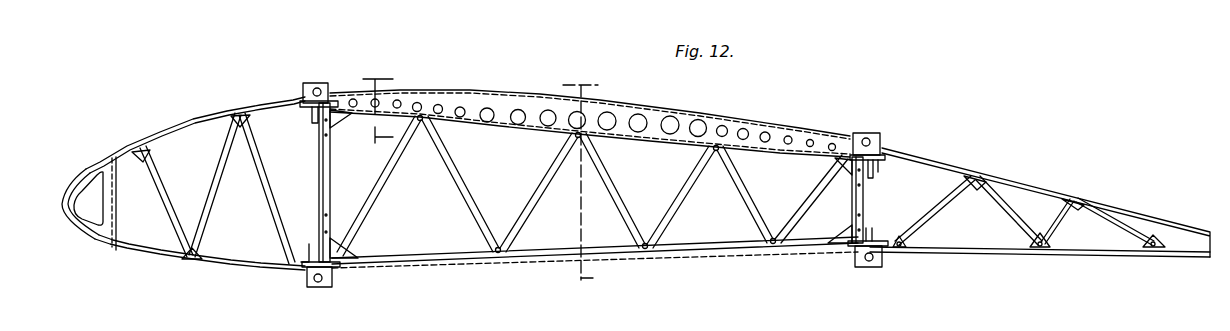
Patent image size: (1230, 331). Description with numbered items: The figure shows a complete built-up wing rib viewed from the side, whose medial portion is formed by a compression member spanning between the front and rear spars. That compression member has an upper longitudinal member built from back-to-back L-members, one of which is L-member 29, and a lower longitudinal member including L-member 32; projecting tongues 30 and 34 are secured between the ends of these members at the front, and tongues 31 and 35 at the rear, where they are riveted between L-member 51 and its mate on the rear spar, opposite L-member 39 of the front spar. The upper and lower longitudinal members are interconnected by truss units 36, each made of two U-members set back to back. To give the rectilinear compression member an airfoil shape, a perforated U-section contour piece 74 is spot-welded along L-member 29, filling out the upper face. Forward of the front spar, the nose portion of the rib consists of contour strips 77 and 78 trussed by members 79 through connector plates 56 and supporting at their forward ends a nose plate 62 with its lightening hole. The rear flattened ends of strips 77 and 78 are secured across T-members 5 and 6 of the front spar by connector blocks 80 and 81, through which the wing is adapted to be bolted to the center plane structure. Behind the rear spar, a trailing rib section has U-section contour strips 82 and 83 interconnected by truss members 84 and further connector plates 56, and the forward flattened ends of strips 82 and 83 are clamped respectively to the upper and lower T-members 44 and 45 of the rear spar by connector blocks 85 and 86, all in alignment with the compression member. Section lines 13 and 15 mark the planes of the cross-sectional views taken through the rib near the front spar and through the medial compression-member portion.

The T-member 5 is at (312, 115).
The T-member 6 is at (309, 258).
The section line 13- 13 is at (378, 113).
The section line 15- 15 is at (579, 185).
The L-member 29 is at (517, 133).
The projecting tongue 30 is at (339, 122).
The projecting tongue 31 is at (828, 177).
The L-member 32 is at (694, 238).
The projecting tongue 34 is at (342, 246).
The projecting tongue 35 is at (846, 236).
The truss unit 36 is at (677, 195).
The L-member 39 is at (330, 178).
The upper T-member 44 is at (874, 160).
The lower T-member 45 is at (878, 237).
The L-member 51 is at (857, 193).
The connector plate 56 is at (146, 150).
The nose plate 62 is at (85, 232).
The contour piece 74 is at (626, 113).
The contour strip 77 is at (193, 115).
The contour strip 78 is at (230, 268).
The truss member 79 is at (208, 193).
The connector block 80 is at (318, 82).
The connector block 81 is at (308, 288).
The contour strip 82 is at (1027, 181).
The contour strip 83 is at (990, 253).
The truss member 84 is at (1003, 213).
The connector block 85 is at (878, 133).
The connector block 86 is at (878, 268).